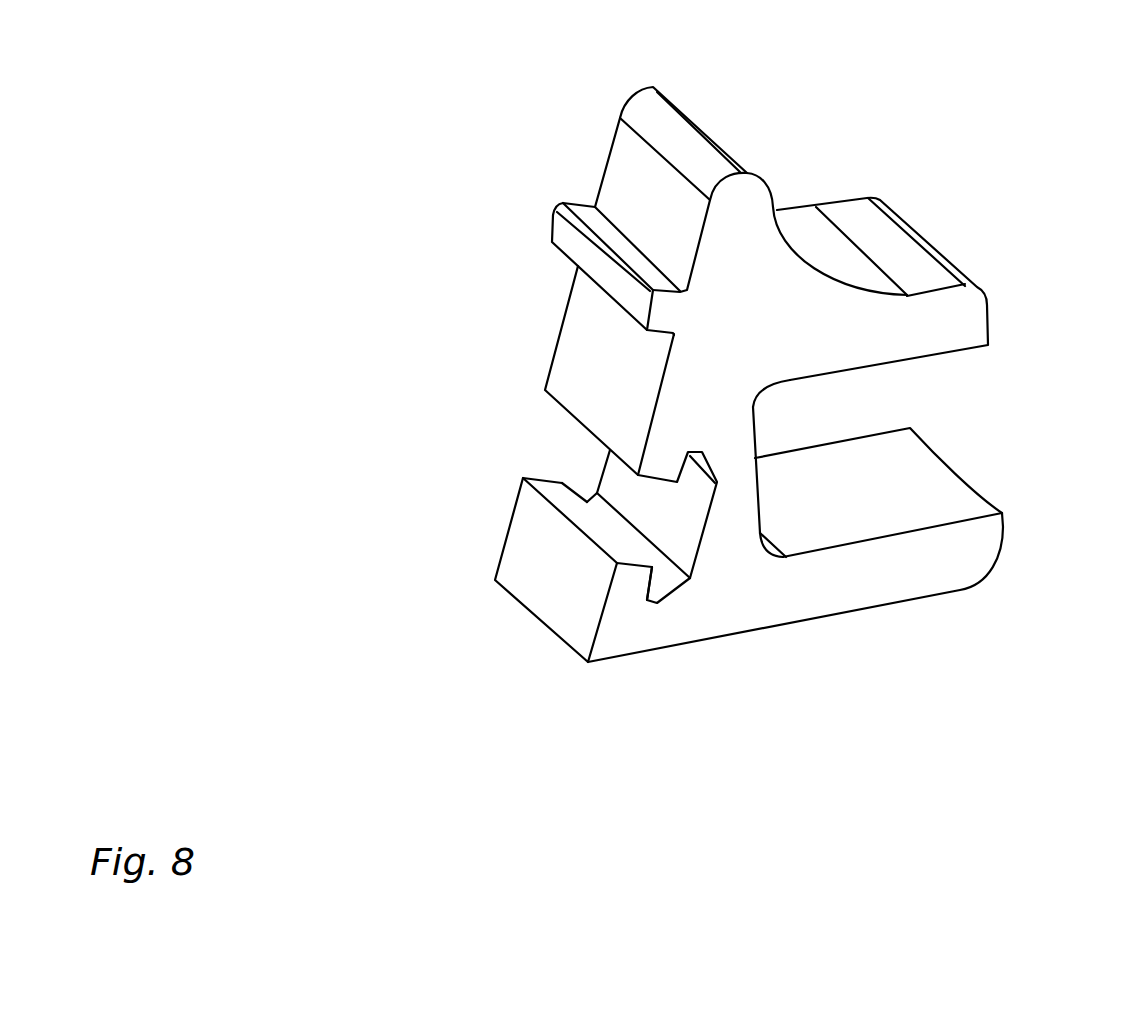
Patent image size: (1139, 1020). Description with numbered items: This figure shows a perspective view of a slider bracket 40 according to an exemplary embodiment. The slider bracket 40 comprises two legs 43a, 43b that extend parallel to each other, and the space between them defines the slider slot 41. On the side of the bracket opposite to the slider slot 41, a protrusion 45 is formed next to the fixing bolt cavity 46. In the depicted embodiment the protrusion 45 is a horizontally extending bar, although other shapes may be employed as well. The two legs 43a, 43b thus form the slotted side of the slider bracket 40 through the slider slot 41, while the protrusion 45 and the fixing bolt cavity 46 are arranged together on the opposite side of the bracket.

The slider bracket 40 is at (903, 103).
The slider slot 41 is at (1005, 398).
The leg 43a is at (976, 315).
The leg 43b is at (913, 583).
The protrusion 45 is at (557, 193).
The fixing bolt cavity 46 is at (530, 435).